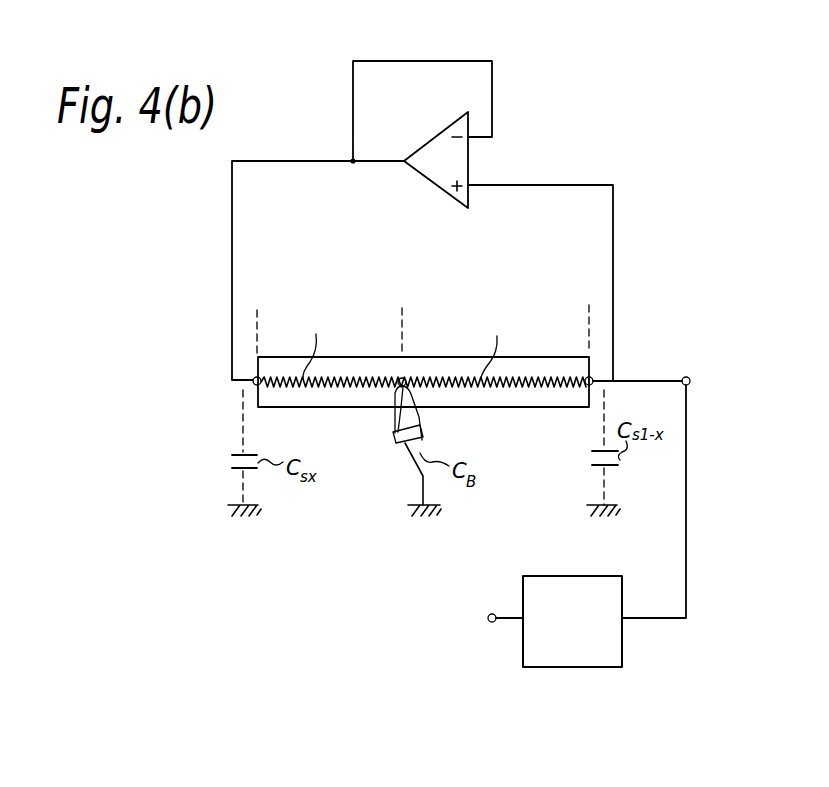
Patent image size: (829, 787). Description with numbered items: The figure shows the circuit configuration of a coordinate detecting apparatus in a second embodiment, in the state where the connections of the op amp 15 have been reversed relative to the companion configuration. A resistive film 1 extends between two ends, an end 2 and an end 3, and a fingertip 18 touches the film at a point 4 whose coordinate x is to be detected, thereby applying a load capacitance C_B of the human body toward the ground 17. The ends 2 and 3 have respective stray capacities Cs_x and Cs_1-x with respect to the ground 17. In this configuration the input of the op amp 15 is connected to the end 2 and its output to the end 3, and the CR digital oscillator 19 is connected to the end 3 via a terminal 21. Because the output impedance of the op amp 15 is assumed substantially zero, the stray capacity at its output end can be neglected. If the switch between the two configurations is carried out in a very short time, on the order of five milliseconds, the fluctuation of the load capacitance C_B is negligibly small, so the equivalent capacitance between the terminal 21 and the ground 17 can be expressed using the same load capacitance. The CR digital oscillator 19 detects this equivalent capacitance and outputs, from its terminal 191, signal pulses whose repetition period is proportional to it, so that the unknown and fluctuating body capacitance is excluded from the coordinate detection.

The resistive film 1 is at (426, 359).
The end 2 is at (254, 379).
The end 3 is at (593, 380).
The point 4 is at (402, 378).
The op amp 15 is at (420, 177).
The ground 17 is at (259, 512).
The fingertip 18 is at (417, 432).
The CR digital oscillator 19 is at (590, 668).
The terminal 21 is at (689, 378).
The terminal 191 is at (488, 616).